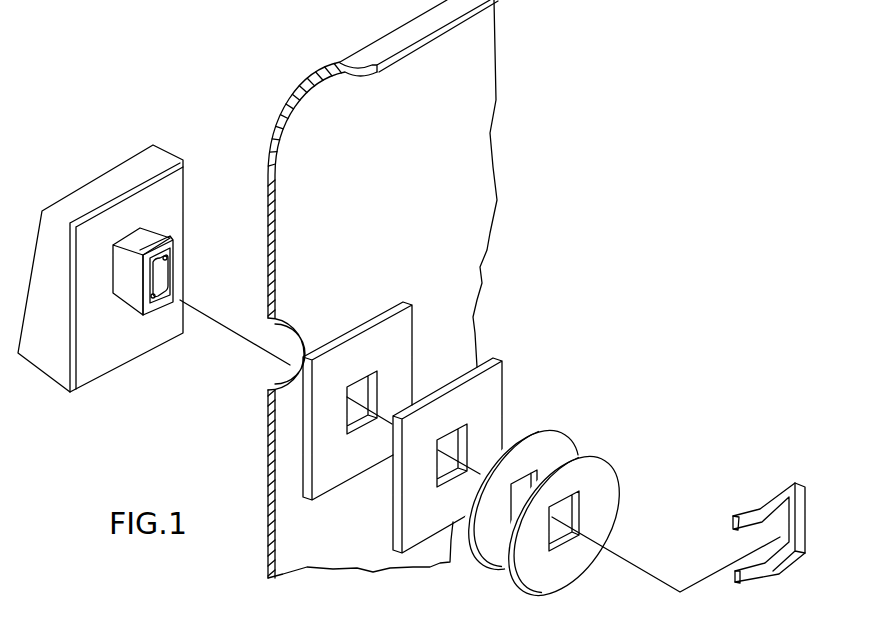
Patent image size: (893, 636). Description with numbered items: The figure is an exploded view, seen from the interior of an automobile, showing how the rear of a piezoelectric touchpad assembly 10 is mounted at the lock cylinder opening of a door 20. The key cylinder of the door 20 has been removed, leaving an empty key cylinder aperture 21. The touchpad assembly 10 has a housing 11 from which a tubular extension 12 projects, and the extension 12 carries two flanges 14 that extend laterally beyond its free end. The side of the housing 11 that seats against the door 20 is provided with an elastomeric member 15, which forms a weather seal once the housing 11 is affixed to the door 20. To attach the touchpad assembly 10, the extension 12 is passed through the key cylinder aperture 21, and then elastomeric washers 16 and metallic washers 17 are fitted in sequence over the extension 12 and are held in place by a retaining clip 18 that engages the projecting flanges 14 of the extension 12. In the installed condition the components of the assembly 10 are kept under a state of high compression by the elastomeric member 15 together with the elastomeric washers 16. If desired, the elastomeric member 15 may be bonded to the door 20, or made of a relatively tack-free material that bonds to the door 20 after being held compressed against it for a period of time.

The touchpad assembly 10 is at (178, 138).
The housing 11 is at (97, 197).
The tubular extension 12 is at (132, 288).
The flanges 14 is at (164, 238).
The elastomeric member 15 is at (170, 198).
The elastomeric washers 16 is at (473, 383).
The metallic washers 17 is at (590, 462).
The retaining clip 18 is at (795, 483).
The door 20 is at (333, 107).
The key cylinder aperture 21 is at (284, 381).